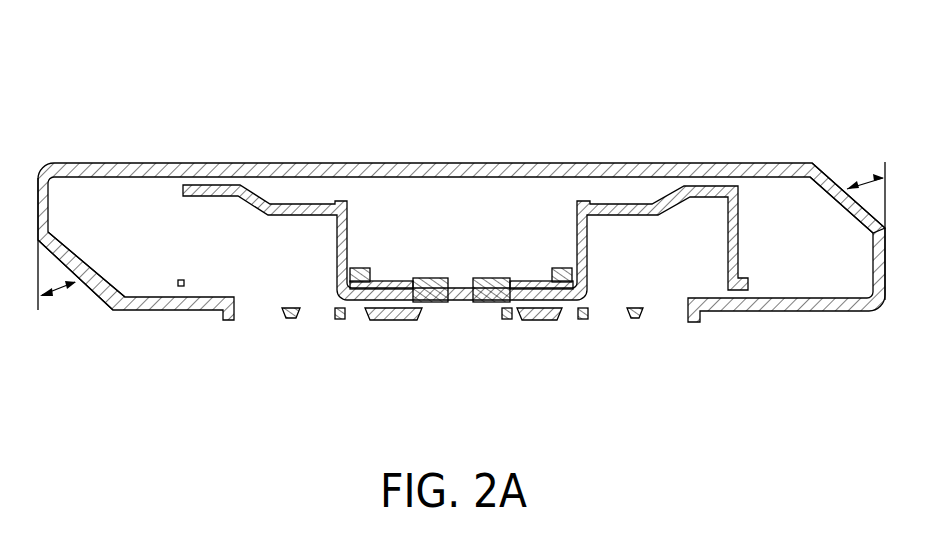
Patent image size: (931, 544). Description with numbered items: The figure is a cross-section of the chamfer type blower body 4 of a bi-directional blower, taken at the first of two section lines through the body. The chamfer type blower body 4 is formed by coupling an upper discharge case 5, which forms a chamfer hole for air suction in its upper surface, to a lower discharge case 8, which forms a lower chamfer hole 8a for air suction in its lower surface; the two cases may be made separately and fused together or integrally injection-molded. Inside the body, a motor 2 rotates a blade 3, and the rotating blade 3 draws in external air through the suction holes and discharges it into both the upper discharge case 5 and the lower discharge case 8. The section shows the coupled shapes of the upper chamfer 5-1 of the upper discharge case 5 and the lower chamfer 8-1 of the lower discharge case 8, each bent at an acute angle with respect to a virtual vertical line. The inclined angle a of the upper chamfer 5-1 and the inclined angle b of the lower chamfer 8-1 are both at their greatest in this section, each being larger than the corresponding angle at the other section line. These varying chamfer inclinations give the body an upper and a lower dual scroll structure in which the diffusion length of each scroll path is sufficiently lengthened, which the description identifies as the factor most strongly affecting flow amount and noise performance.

The motor 2 is at (450, 247).
The blade 3 is at (296, 204).
The chamfer type blower body 4 is at (461, 176).
The upper discharge case 5 is at (670, 163).
The lower discharge case 8 is at (765, 300).
The upper chamfer 5-1 is at (845, 205).
The lower chamfer 8-1 is at (82, 265).
The lower chamfer hole 8a is at (290, 320).
The inclined angle of the upper chamfer a is at (865, 164).
The inclined angle of the lower chamfer b is at (59, 310).